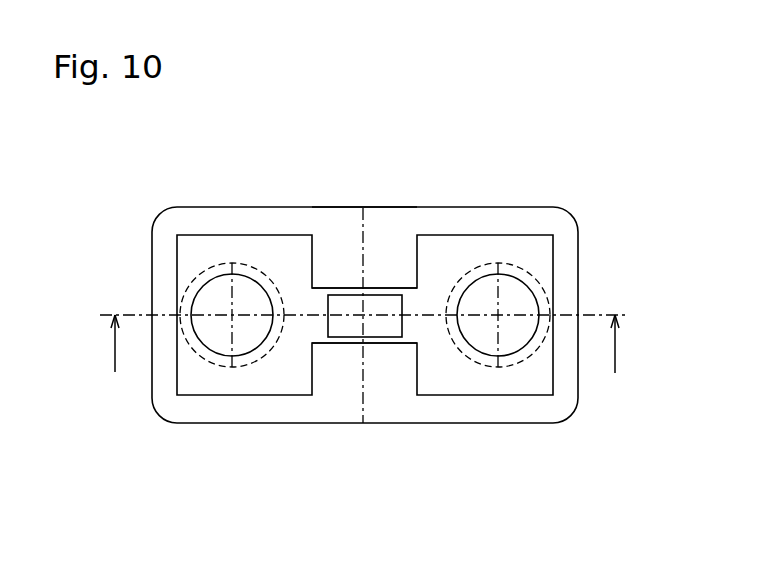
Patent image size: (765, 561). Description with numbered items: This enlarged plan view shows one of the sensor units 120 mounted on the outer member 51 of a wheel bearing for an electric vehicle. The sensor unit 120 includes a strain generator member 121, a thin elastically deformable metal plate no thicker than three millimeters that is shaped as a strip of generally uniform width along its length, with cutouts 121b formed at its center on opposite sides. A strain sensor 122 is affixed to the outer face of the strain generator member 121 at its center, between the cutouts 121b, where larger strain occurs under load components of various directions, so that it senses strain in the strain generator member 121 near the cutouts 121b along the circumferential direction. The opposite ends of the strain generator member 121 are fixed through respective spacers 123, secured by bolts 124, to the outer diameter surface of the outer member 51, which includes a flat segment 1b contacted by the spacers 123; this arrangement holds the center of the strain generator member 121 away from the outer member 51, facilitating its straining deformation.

The outer member 51 is at (650, 169).
The sensor unit 120 is at (305, 223).
The strain generator member 121 is at (448, 258).
The cutouts 121b is at (405, 288).
The flat segment 1b is at (338, 243).
The strain sensor 122 is at (350, 327).
The spacers 123 is at (208, 268).
The bolts 124 is at (222, 338).